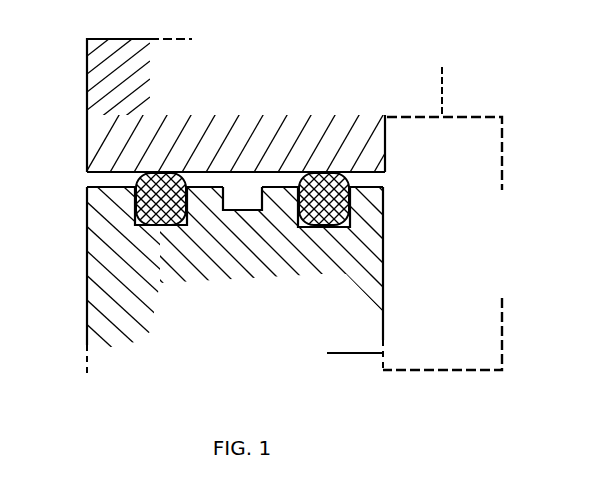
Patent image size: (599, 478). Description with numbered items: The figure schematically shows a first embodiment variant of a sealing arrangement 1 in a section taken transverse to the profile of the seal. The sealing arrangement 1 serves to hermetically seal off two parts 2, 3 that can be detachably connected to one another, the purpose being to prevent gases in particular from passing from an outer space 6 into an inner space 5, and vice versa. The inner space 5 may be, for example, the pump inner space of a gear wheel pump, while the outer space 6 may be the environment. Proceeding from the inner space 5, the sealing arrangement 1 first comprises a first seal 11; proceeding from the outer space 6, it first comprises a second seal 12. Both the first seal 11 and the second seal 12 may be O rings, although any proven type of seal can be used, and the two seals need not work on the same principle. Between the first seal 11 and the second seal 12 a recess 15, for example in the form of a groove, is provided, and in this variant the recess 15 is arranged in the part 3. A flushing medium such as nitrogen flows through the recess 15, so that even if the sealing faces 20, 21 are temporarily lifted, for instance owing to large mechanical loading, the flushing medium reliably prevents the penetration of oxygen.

The sealing arrangement 1 is at (278, 204).
The part 2 is at (282, 94).
The part 3 is at (130, 334).
The inner space 5 is at (456, 249).
The outer space 6 is at (53, 192).
The first seal 11 is at (328, 174).
The second seal 12 is at (166, 178).
The recess 15 is at (242, 200).
The sealing face 20 is at (120, 190).
The sealing face 21 is at (115, 178).